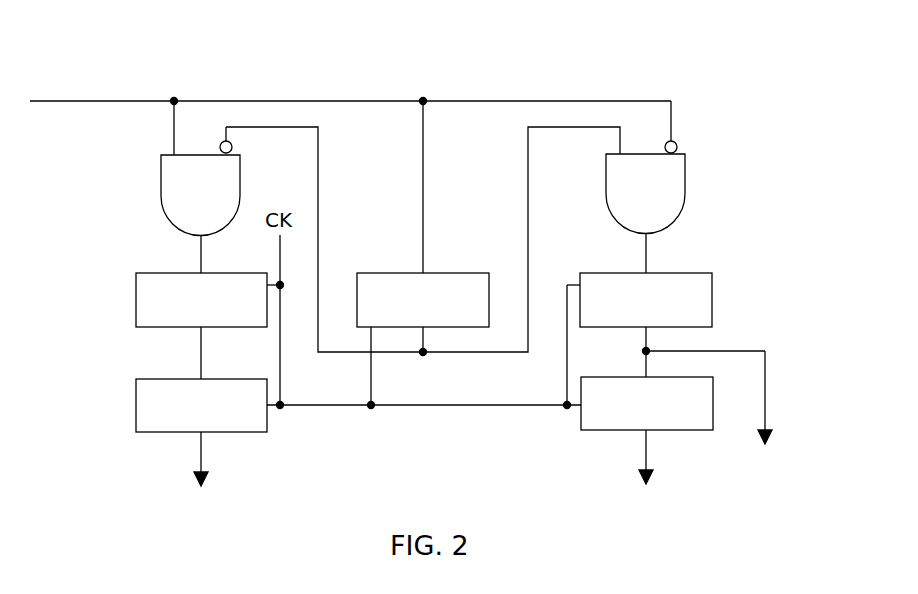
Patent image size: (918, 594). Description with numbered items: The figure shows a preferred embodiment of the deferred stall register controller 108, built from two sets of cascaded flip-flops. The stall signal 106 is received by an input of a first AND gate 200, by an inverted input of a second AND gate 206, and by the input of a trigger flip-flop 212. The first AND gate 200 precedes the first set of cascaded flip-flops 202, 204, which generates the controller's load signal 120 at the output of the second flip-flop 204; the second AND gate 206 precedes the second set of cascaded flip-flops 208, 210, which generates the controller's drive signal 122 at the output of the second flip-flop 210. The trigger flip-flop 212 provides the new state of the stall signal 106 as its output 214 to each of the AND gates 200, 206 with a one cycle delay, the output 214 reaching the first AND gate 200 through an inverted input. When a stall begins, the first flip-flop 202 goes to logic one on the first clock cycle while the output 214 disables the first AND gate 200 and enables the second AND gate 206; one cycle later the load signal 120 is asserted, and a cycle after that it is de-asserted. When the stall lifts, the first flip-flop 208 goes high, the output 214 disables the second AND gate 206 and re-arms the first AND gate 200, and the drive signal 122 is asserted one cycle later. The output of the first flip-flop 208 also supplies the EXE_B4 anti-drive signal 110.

The stall signal 106 is at (122, 101).
The deferred stall register controller 108 is at (700, 54).
The EXE_B4 anti-drive signal 110 is at (765, 404).
The load signal 120 is at (200, 458).
The drive signal 122 is at (646, 453).
The first AND gate 200 is at (161, 183).
The first flip-flop of the first set 202 is at (136, 300).
The second flip-flop of the first set 204 is at (267, 418).
The second AND gate 206 is at (685, 178).
The first flip-flop of the second set 208 is at (712, 298).
The second flip-flop of the second set 210 is at (581, 417).
The trigger flip-flop 212 is at (449, 273).
The output of the trigger flip-flop 214 is at (436, 353).